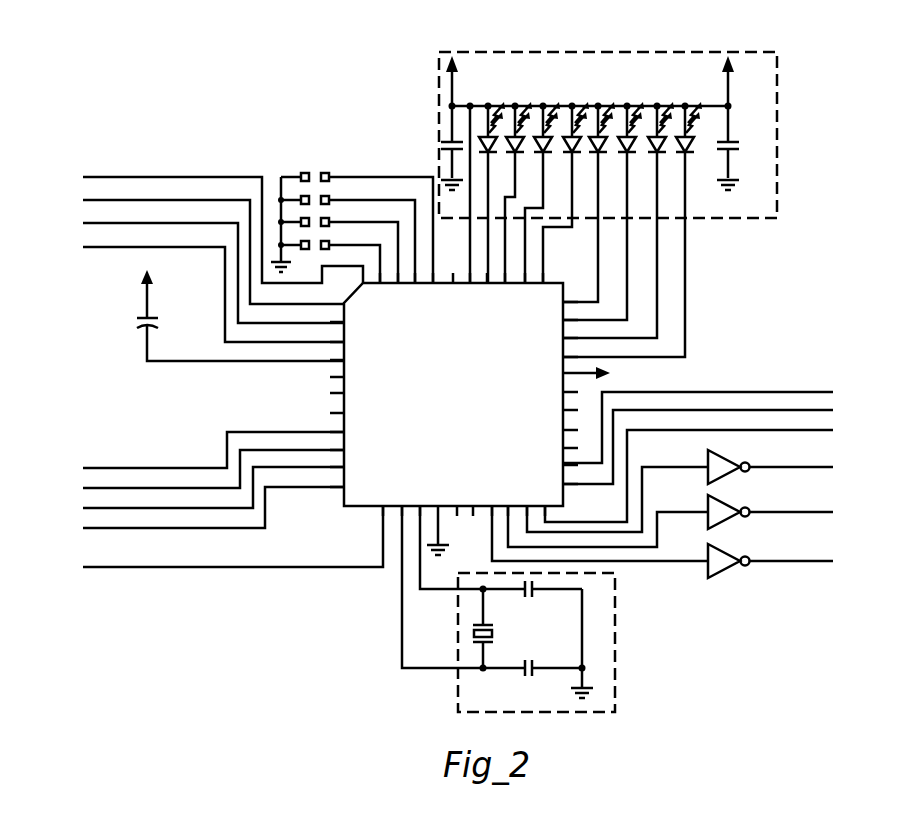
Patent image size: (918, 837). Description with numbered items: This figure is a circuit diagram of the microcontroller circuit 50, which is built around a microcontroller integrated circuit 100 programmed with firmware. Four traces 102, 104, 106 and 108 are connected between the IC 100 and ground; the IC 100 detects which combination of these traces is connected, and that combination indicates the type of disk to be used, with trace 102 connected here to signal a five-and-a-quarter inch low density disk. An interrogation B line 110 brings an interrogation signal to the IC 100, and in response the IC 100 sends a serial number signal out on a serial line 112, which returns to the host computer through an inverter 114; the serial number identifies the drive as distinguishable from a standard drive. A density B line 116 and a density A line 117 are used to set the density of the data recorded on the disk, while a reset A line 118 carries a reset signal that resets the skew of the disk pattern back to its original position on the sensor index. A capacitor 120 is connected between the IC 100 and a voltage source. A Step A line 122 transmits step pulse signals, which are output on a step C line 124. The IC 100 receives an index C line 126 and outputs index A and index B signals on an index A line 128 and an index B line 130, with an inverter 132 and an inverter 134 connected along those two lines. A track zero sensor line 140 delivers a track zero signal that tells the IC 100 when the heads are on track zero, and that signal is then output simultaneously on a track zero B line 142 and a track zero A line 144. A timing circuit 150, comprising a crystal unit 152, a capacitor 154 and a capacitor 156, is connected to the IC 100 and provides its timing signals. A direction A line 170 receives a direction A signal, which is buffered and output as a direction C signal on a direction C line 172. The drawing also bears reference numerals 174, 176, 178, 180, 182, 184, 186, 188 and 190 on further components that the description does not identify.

The microcontroller circuit 50 is at (330, 642).
The microcontroller integrated circuit 100 is at (468, 447).
The trace 102 is at (329, 173).
The trace 104 is at (329, 196).
The trace 106 is at (329, 218).
The trace 108 is at (329, 241).
The interrogation B line 110 is at (84, 178).
The serial line 112 is at (832, 563).
The inverter 114 is at (708, 551).
The density B line 116 is at (84, 201).
The density A line 117 is at (84, 248).
The reset A line 118 is at (84, 224).
The capacitor 120 is at (159, 325).
The Step A line 122 is at (84, 469).
The step C line 124 is at (832, 432).
The index C line 126 is at (84, 489).
The index A line 128 is at (832, 469).
The index B line 130 is at (832, 514).
The inverter 132 is at (708, 457).
The inverter 134 is at (708, 502).
The track zero sensor line 140 is at (84, 568).
The track zero B line 142 is at (84, 509).
The track zero A line 144 is at (84, 529).
The timing circuit 150 is at (458, 700).
The crystal unit 152 is at (493, 633).
The capacitor 154 is at (530, 597).
The capacitor 156 is at (530, 660).
The direction A line 170 is at (617, 52).
The direction C line 172 is at (441, 145).
The capacitor 174 is at (739, 145).
The LED 176 is at (486, 104).
The LED 178 is at (511, 100).
The LED 180 is at (550, 93).
The LED 182 is at (576, 100).
The LED 184 is at (606, 93).
The LED 186 is at (632, 100).
The LED 188 is at (661, 93).
The LED 190 is at (688, 104).